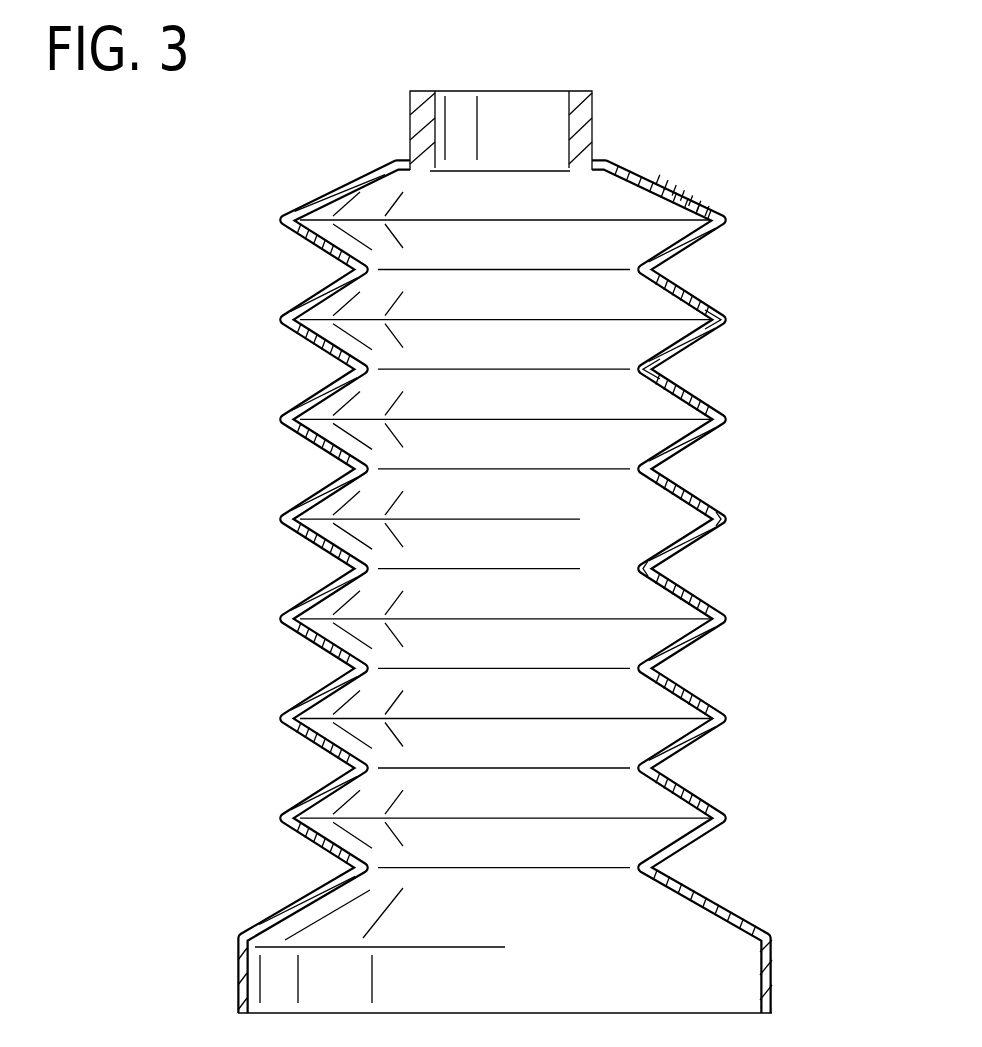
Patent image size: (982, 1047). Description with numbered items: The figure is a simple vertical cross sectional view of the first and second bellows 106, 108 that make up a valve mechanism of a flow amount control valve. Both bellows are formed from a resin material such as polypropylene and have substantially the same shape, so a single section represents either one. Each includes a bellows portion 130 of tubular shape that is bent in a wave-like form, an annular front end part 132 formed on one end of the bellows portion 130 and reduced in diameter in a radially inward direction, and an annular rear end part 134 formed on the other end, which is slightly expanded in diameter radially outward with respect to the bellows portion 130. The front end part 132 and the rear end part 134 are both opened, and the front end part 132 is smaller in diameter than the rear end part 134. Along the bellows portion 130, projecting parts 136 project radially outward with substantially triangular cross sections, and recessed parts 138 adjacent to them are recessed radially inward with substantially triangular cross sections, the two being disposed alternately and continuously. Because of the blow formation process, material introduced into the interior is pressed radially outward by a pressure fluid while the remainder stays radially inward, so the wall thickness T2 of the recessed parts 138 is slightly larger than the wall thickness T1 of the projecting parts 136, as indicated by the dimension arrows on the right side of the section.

The bellows portion 130 is at (517, 552).
The front end part 132 is at (586, 112).
The rear end part 134 is at (238, 987).
The projecting parts 136 is at (726, 318).
The recessed parts 138 is at (652, 371).
The first bellows 106 is at (517, 552).
The second bellows 108 is at (482, 552).
The wall thickness of the projecting parts T1 is at (648, 519).
The wall thickness of the recessed parts T2 is at (570, 569).